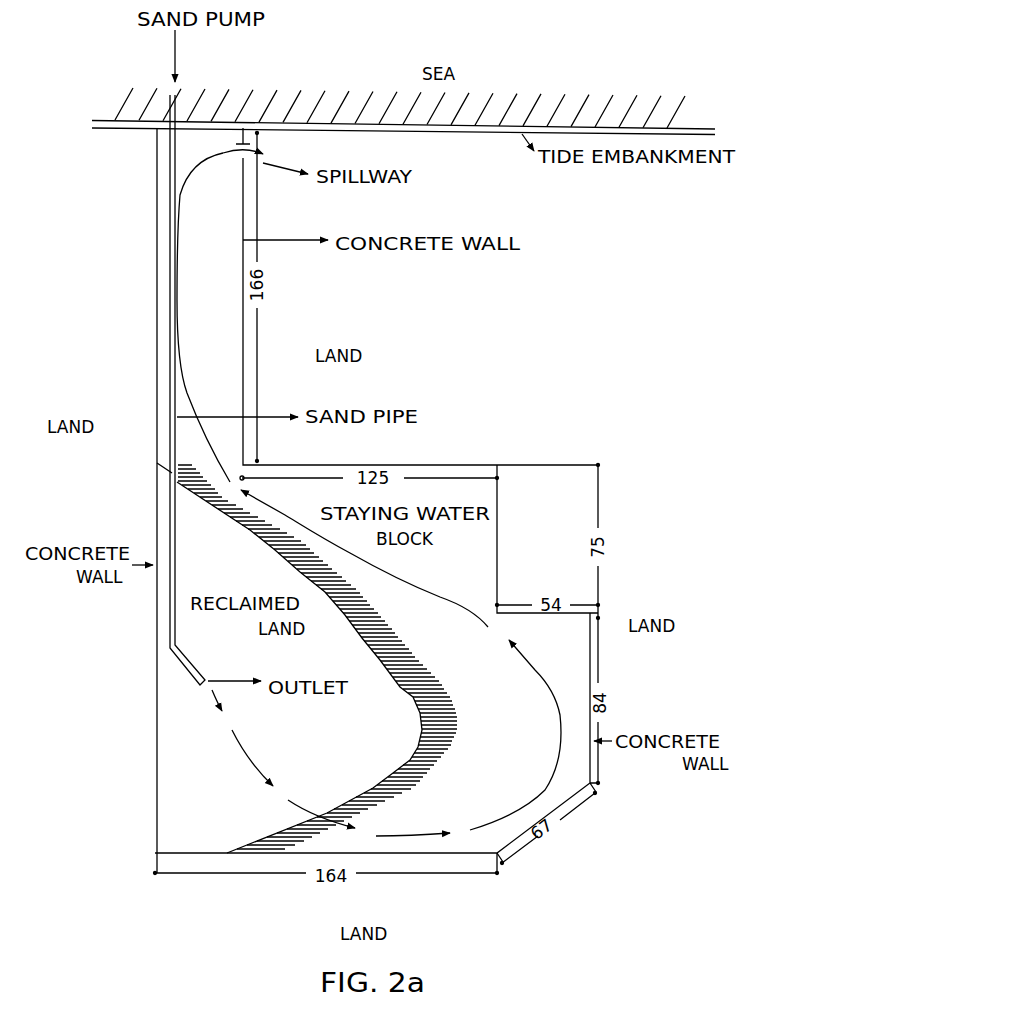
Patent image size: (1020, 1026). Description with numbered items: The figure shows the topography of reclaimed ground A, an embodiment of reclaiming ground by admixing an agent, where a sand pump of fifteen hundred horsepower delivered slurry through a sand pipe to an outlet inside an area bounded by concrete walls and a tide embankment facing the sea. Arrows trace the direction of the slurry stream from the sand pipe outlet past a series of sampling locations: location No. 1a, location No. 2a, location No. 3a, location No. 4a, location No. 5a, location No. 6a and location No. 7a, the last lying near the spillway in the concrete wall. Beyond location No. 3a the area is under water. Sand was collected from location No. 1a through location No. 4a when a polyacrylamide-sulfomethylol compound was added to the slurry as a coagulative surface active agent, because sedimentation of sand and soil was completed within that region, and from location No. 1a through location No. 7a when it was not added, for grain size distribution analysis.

The location No. 1a is at (252, 712).
The location No. 2a is at (286, 763).
The location No. 3a is at (356, 817).
The location No. 4a is at (440, 824).
The location No. 5a is at (518, 725).
The location No. 6a is at (357, 553).
The location No. 7a is at (220, 316).